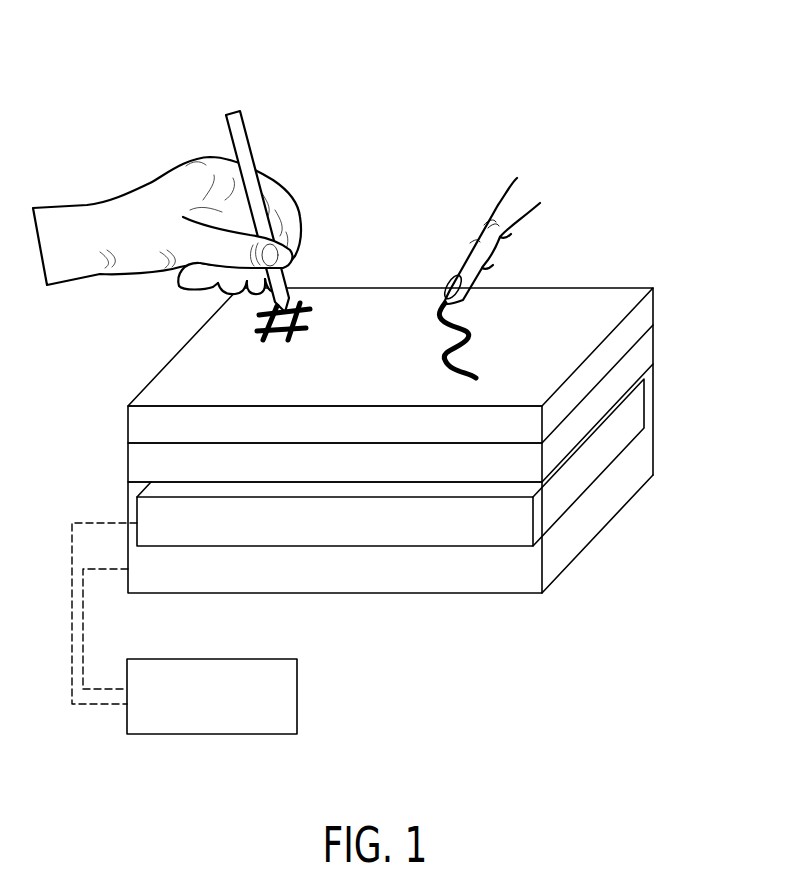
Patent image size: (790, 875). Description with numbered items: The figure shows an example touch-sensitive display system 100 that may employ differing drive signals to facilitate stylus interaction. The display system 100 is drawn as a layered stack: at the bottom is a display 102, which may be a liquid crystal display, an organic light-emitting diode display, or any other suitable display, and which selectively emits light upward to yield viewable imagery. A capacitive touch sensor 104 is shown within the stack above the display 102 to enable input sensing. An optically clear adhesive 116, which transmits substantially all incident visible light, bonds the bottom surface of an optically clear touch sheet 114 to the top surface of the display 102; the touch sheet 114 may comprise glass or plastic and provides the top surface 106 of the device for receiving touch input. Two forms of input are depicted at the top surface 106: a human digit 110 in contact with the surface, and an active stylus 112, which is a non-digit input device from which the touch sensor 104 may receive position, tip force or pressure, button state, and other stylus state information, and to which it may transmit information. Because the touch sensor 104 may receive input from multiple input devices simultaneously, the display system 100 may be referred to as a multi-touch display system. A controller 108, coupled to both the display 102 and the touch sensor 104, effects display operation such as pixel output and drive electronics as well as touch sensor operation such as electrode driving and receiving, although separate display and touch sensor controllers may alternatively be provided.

The touch-sensitive display system 100 is at (399, 62).
The display 102 is at (398, 580).
The capacitive touch sensor 104 is at (403, 533).
The top surface 106 is at (616, 303).
The controller 108 is at (228, 721).
The human digit 110 is at (497, 196).
The active stylus 112 is at (250, 133).
The optically clear touch sheet 114 is at (430, 435).
The optically clear adhesive 116 is at (390, 473).